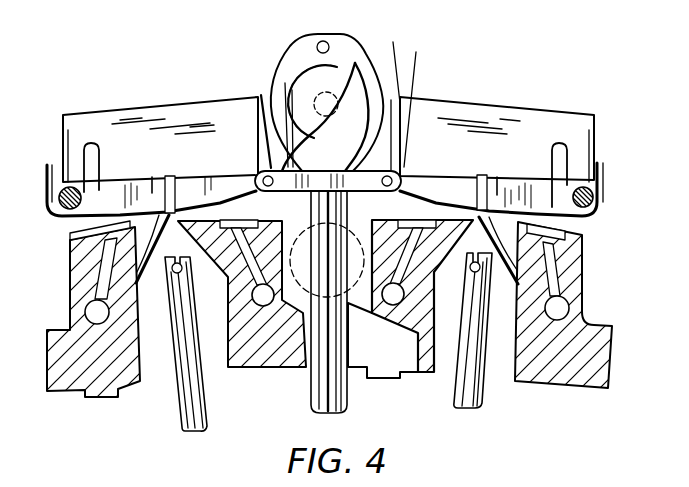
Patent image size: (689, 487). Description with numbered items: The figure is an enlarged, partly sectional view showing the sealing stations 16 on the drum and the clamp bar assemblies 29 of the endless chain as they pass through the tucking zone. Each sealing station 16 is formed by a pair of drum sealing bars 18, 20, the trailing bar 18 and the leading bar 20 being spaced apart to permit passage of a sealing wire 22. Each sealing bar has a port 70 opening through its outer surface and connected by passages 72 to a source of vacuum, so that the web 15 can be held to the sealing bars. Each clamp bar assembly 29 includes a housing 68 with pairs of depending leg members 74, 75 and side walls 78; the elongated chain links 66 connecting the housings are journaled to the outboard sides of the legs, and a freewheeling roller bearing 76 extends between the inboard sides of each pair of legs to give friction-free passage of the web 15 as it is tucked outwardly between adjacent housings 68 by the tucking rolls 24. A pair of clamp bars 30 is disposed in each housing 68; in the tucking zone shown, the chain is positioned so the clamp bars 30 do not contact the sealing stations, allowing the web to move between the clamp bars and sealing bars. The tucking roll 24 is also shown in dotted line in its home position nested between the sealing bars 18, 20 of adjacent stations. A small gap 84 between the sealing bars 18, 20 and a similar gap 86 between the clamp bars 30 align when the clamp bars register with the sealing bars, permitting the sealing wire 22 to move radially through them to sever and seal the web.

The clamp bar assembly 29 is at (54, 70).
The housing 68 is at (130, 108).
The depending leg member 74 is at (65, 126).
The depending leg member 75 is at (66, 176).
The web 15 is at (47, 181).
The freewheeling roller bearing 76 is at (55, 209).
The port 70 is at (70, 238).
The passages 72 is at (73, 263).
The drum sealing bar 20 is at (77, 283).
The drum sealing bar 18 is at (245, 368).
The sealing wire 22 is at (186, 276).
The gap 84 is at (326, 259).
The tucking roll 24 is at (327, 88).
The chain link 66 is at (304, 195).
The gap 86 is at (173, 193).
The clamp bar 30 is at (207, 173).
The side wall 78 is at (190, 148).
The sealing station 16 is at (63, 440).